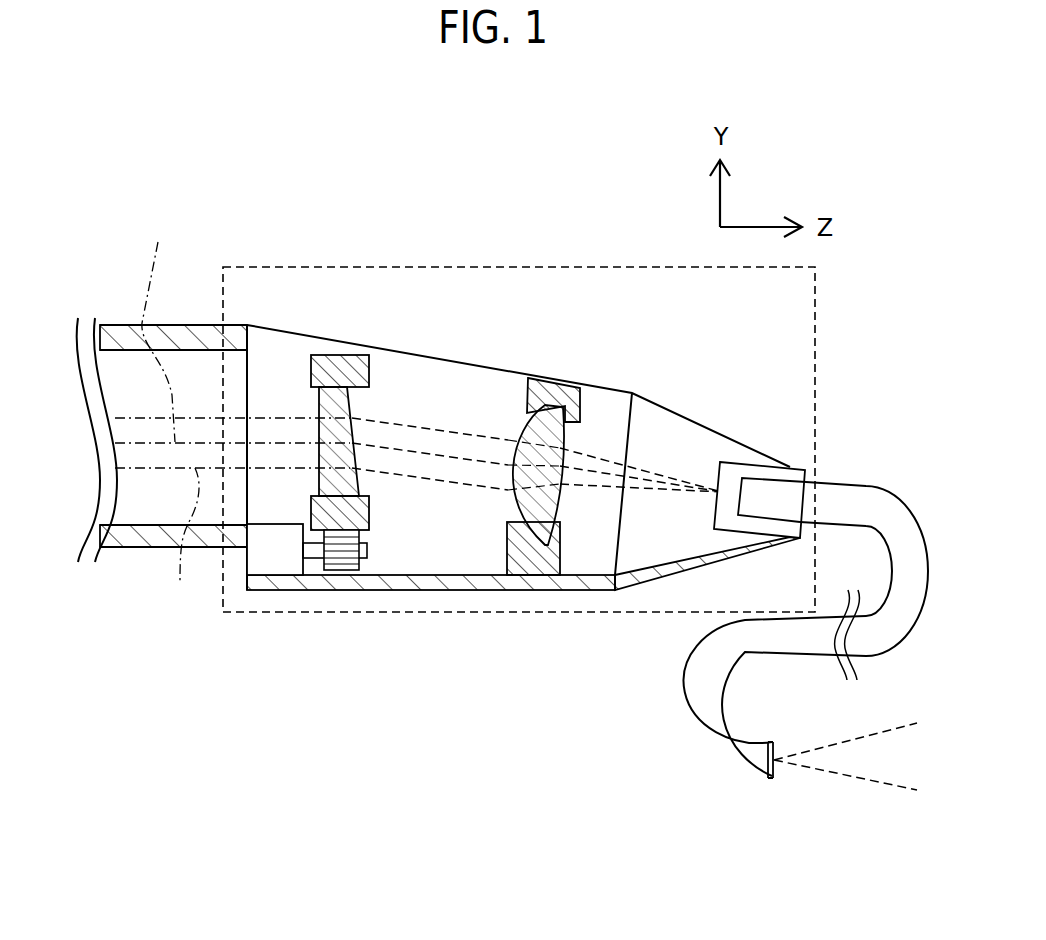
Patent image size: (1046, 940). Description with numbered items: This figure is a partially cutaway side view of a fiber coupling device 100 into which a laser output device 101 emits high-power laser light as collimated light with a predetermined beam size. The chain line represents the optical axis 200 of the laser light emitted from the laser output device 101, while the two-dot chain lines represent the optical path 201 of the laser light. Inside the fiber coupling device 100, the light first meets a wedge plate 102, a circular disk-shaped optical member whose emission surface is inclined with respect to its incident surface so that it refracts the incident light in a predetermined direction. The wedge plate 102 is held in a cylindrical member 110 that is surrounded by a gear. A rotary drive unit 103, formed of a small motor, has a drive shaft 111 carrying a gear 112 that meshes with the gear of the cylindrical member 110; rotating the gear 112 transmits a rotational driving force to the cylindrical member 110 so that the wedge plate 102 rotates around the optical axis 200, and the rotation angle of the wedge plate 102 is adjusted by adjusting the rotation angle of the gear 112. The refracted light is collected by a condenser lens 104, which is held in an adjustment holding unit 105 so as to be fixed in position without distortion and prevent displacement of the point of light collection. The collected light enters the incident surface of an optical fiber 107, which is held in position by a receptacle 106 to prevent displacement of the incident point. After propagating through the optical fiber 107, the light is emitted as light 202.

The fiber coupling device 100 is at (263, 264).
The laser output device 101 is at (138, 550).
The wedge plate 102 is at (348, 402).
The rotary drive unit 103 is at (265, 567).
The condenser lens 104 is at (523, 430).
The adjustment holding unit 105 is at (532, 565).
The receptacle 106 is at (737, 467).
The optical fiber 107 is at (843, 500).
The cylindrical member 110 is at (366, 512).
The drive shaft 111 is at (312, 552).
The gear 112 is at (344, 567).
The optical axis 200 is at (232, 338).
The optical path 201 is at (180, 543).
The light 202 is at (862, 780).